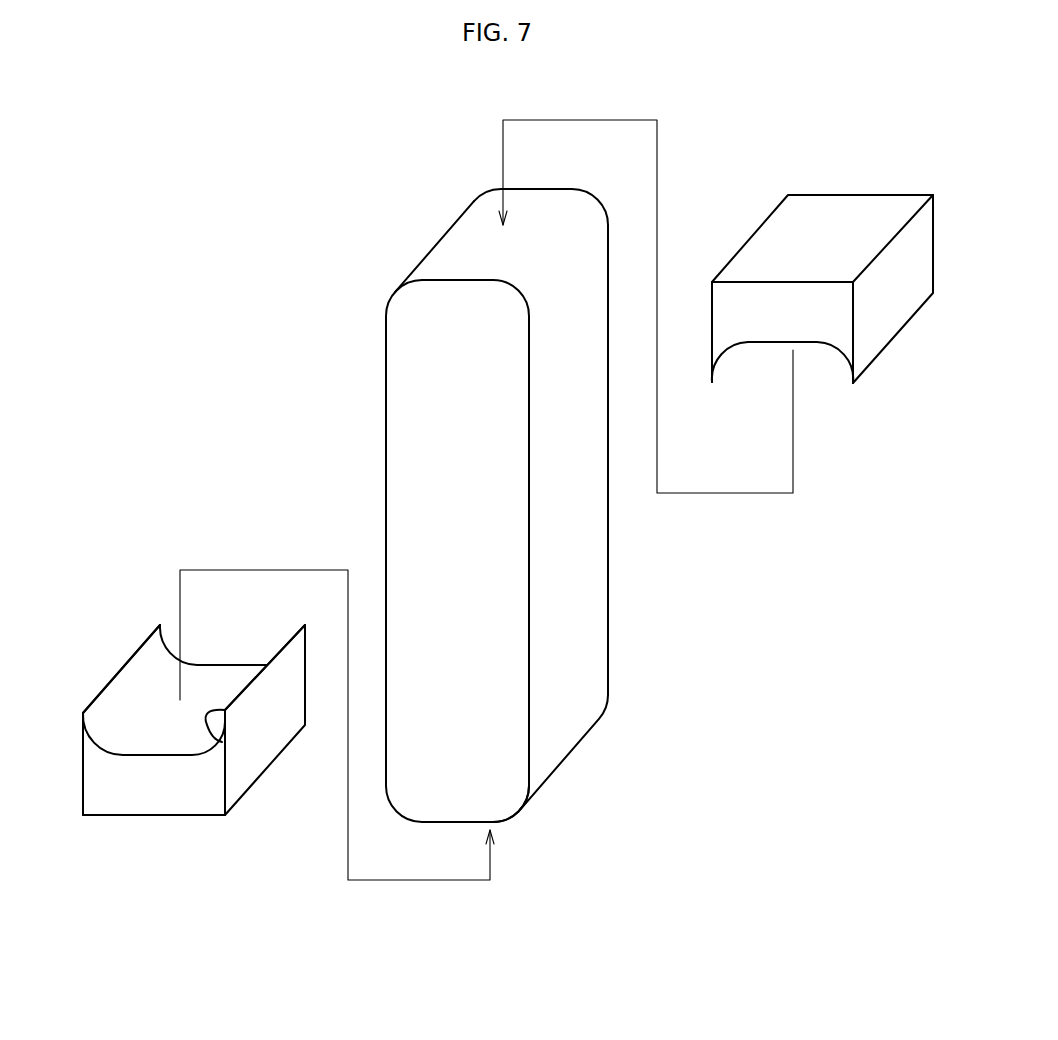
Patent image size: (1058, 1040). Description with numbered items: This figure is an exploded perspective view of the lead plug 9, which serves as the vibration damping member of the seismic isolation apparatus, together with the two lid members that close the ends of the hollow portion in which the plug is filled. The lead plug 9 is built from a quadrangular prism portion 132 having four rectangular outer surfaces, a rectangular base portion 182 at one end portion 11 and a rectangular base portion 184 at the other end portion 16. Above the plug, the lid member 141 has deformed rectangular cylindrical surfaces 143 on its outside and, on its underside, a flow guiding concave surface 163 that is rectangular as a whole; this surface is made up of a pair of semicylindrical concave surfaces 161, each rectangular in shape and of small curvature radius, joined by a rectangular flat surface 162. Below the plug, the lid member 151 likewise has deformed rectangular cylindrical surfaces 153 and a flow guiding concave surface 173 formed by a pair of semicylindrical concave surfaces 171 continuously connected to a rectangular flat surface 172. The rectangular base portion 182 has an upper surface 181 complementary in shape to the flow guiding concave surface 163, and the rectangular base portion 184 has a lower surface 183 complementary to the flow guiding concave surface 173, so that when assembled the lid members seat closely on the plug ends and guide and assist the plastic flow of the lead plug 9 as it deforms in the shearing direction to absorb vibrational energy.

The lead plug 9 is at (359, 469).
The one end portion 11 is at (558, 205).
The another end portion 16 is at (555, 750).
The quadrangular prism portion 132 is at (595, 590).
The lid member 141 is at (865, 173).
The deformed rectangular cylindrical surfaces 143 is at (890, 332).
The lid member 151 is at (141, 839).
The deformed rectangular cylindrical surfaces 153 is at (193, 795).
The semicylindrical concave surfaces 161 is at (723, 365).
The flat surface 162 is at (810, 343).
The flow guiding concave surface 163 is at (767, 343).
The semicylindrical concave surfaces 171 is at (125, 688).
The flat surface 172 is at (150, 740).
The flow guiding concave surface 173 is at (217, 683).
The upper surface 181 is at (463, 245).
The rectangular base portion 182 is at (428, 297).
The lower surface 183 is at (443, 823).
The rectangular base portion 184 is at (502, 808).